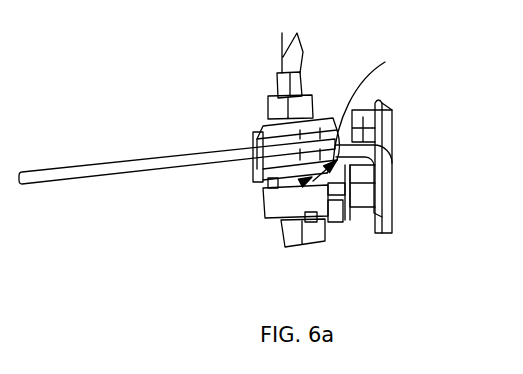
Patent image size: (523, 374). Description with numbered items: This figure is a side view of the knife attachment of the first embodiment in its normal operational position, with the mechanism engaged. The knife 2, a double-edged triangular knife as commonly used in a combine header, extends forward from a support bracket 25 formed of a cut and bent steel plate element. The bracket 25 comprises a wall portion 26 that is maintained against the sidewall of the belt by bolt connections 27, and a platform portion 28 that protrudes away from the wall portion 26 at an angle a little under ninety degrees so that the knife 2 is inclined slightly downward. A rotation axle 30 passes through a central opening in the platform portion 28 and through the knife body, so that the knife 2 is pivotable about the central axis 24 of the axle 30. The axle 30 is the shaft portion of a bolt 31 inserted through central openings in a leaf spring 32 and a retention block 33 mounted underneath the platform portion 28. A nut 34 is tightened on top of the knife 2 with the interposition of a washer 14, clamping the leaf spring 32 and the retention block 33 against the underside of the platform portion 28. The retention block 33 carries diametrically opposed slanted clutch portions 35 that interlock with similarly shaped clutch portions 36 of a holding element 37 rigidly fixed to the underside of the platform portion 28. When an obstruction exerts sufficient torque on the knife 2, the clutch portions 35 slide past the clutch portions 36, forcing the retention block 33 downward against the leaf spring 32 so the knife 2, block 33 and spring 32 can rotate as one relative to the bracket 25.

The knife 2 is at (150, 160).
The washer 14 is at (258, 133).
The central axis 24 is at (303, 52).
The support bracket 25 is at (393, 161).
The wall portion 26 is at (392, 135).
The bolt connections 27 is at (362, 112).
The platform portion 28 is at (250, 153).
The rotation axle 30 is at (277, 82).
The bolt 31 is at (295, 230).
The leaf spring 32 is at (338, 218).
The retention block 33 is at (266, 210).
The nut 34 is at (302, 108).
The clutch portions 35 is at (295, 186).
The clutch portions 36 is at (374, 105).
The holding element 37 is at (270, 172).